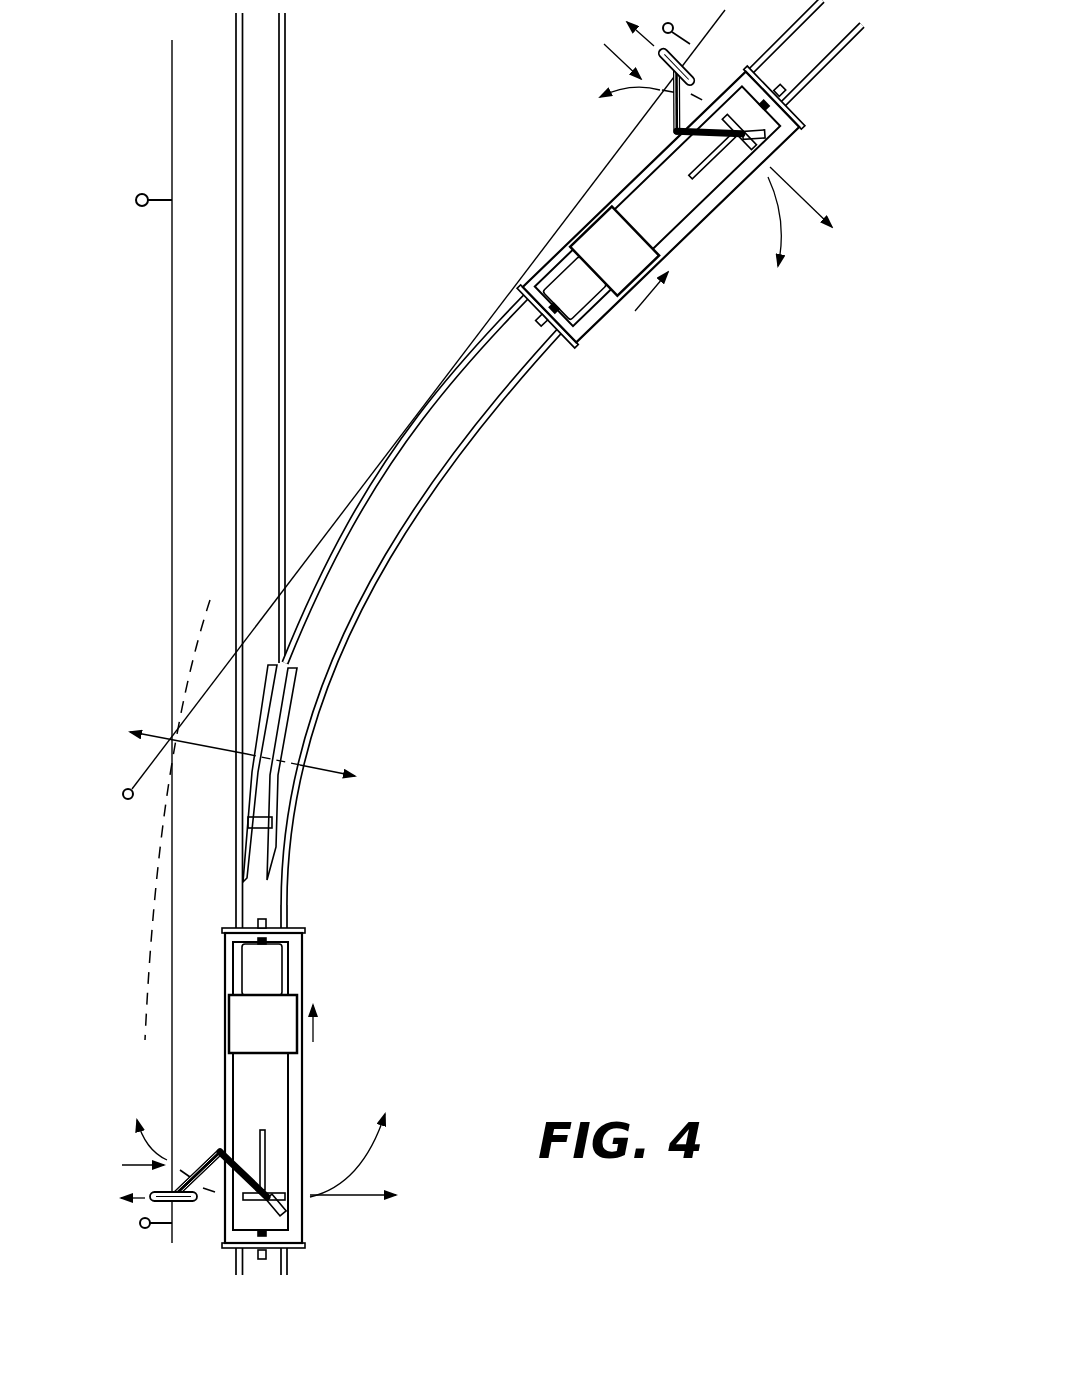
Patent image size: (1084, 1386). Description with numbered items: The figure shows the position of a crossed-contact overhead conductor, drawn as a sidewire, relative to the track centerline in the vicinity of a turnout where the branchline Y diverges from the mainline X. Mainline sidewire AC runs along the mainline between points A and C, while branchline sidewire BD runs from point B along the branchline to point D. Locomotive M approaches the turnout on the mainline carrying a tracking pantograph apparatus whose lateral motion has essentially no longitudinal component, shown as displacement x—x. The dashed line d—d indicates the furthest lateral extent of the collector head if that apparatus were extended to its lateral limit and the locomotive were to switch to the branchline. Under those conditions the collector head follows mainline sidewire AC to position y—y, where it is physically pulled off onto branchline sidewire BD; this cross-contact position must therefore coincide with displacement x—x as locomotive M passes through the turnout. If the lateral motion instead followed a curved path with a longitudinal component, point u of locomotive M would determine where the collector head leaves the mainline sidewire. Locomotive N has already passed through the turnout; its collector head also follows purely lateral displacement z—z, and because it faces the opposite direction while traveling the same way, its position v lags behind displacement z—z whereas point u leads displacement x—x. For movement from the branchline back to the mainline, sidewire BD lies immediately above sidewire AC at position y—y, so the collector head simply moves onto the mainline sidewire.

The mainline X is at (254, 420).
The branchline Y is at (312, 672).
The locomotive M is at (273, 1083).
The locomotive N is at (685, 210).
The endpoint of mainline sidewire A is at (159, 1242).
The endpoint of branchline sidewire B is at (419, 418).
The endpoint of mainline sidewire C is at (155, 631).
The endpoint of branchline sidewire D is at (702, 23).
The dashed line d— d is at (180, 825).
The point u is at (135, 1147).
The position v is at (616, 55).
The displacement x— x is at (255, 1197).
The position y— y is at (239, 757).
The displacement z— z is at (728, 126).